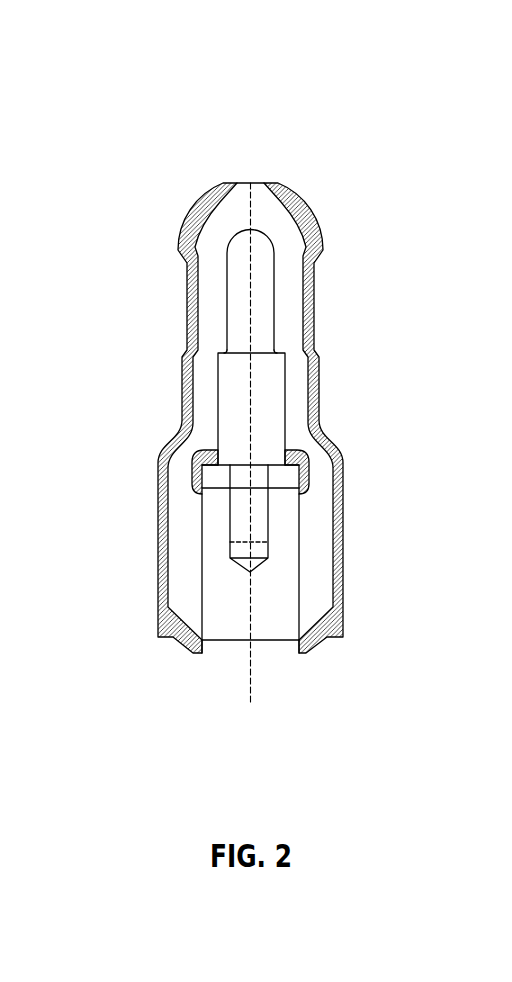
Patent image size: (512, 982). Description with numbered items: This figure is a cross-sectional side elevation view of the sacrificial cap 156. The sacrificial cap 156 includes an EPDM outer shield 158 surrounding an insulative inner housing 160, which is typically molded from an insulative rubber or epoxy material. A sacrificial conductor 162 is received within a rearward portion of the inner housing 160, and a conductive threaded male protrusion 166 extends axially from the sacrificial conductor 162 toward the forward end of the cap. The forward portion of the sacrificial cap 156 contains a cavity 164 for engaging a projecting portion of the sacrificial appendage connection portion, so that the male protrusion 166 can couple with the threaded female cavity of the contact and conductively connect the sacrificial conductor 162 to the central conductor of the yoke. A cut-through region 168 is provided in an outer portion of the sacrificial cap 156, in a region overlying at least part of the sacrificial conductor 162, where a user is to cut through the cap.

The sacrificial cap 156 is at (318, 155).
The EPDM outer shield 158 is at (341, 538).
The insulative inner housing 160 is at (208, 398).
The sacrificial conductor 162 is at (245, 258).
The cavity 164 is at (281, 583).
The conductive threaded male protrusion 166 is at (257, 520).
The cut-through region 168 is at (313, 282).